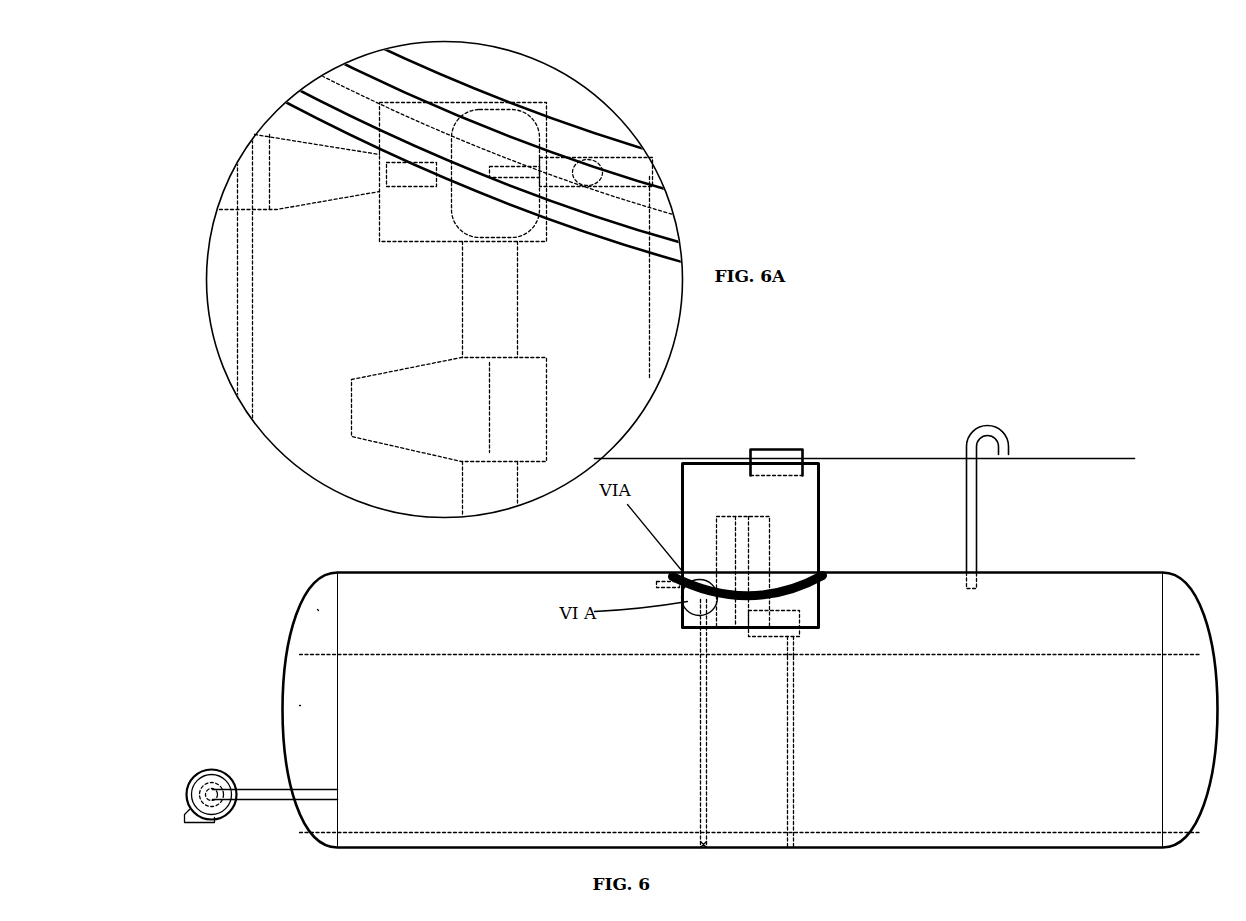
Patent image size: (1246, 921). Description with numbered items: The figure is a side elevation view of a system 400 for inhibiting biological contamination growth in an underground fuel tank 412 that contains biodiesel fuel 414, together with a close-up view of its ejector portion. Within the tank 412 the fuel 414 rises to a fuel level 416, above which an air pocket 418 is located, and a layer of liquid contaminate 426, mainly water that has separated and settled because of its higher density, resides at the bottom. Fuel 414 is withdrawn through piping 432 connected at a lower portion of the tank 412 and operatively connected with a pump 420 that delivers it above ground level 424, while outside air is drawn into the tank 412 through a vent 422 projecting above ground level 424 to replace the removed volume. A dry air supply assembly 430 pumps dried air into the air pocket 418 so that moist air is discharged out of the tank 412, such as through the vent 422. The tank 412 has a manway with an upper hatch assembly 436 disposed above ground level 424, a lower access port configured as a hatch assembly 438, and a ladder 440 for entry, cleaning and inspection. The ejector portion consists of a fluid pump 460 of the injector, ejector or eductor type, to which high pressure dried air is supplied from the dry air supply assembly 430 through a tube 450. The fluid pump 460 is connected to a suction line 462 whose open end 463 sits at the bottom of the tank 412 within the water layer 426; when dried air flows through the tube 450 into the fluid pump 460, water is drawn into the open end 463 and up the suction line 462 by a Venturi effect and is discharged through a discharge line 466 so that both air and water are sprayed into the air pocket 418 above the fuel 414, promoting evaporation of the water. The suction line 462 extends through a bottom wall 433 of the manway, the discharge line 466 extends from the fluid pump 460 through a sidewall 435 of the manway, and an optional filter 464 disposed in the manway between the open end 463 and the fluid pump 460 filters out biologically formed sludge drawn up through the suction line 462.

In FIG. 6, the system for inhibiting biological contamination growth 400 is at (944, 386).
In FIG. 6, the underground fuel tank 412 is at (1135, 572).
In FIG. 6, the biodiesel fuel 414 is at (300, 706).
In FIG. 6, the fuel level 416 is at (300, 655).
In FIG. 6, the air pocket 418 is at (318, 610).
In FIG. 6, the pump 420 is at (215, 770).
In FIG. 6, the vent 422 is at (985, 432).
In FIG. 6, the ground level 424 is at (1060, 458).
In FIG. 6, the liquid contaminate layer 426 is at (392, 838).
In FIG. 6, the dry air supply assembly 430 is at (742, 517).
In FIG. 6, the piping 432 is at (260, 805).
In FIG. 6, the bottom wall 433 is at (810, 642).
In FIG. 6, the sidewall 435 is at (820, 520).
In FIG. 6, the upper hatch assembly 436 is at (792, 452).
In FIG. 6, the hatch assembly 438 is at (803, 608).
In FIG. 6, the ladder 440 is at (795, 755).
In FIG. 6A, the pipe or tube 450 is at (637, 167).
In FIG. 6A, the fluid pump 460 is at (550, 108).
In FIG. 6A, the suction line 462 is at (518, 302).
In FIG. 6, the suction line 462 is at (700, 714).
In FIG. 6, the open end 463 is at (708, 845).
In FIG. 6A, the filter 464 is at (385, 372).
In FIG. 6, the filter 464 is at (690, 608).
In FIG. 6A, the discharge line 466 is at (284, 210).
In FIG. 6, the discharge line 466 is at (660, 572).